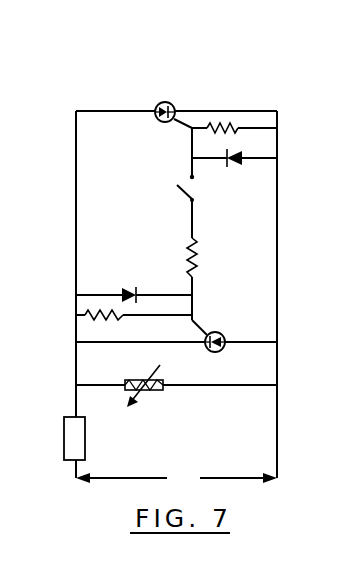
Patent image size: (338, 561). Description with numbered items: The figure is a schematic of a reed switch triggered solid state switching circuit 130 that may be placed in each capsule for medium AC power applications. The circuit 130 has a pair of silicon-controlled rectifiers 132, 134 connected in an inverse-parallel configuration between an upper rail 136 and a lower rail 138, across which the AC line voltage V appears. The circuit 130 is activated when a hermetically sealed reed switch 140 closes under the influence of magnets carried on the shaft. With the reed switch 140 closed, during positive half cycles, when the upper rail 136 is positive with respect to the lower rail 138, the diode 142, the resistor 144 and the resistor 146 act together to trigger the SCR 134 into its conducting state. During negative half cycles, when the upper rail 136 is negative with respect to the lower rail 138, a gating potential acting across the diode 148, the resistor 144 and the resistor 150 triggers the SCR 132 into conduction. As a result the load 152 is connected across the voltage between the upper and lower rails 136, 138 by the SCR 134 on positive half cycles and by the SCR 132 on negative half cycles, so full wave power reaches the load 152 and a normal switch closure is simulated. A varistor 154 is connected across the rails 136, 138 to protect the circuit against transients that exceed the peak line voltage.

The circuit 130 is at (177, 86).
The silicon-controlled rectifier 132 is at (226, 334).
The silicon-controlled rectifier 134 is at (159, 104).
The upper rail 136 is at (78, 198).
The lower rail 138 is at (276, 233).
The reed switch 140 is at (183, 193).
The diode 142 is at (124, 285).
The resistor 144 is at (200, 259).
The resistor 146 is at (223, 122).
The diode 148 is at (238, 166).
The resistor 150 is at (86, 311).
The load 152 is at (86, 438).
The varistor 154 is at (160, 391).